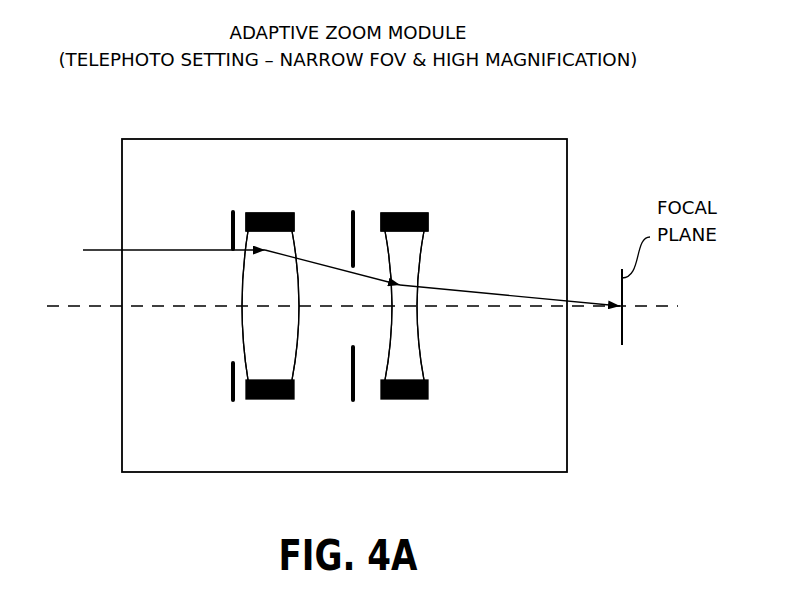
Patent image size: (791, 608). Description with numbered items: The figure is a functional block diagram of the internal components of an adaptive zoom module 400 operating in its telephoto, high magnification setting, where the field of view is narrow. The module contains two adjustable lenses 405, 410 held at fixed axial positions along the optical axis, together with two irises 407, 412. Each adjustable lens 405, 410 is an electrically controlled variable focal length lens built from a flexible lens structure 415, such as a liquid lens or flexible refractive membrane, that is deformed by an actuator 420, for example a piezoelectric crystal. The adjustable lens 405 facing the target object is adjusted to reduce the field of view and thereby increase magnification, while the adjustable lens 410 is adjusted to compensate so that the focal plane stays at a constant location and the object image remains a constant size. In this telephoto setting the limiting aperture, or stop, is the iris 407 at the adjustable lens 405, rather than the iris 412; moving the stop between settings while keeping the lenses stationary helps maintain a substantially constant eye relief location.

The adaptive zoom module 400 is at (122, 425).
The adjustable lens 405 is at (185, 198).
The adjustable lens 410 is at (505, 200).
The flexible lens structure 415 is at (242, 322).
The actuator 420 is at (401, 213).
The iris 407 is at (233, 402).
The iris 412 is at (353, 402).